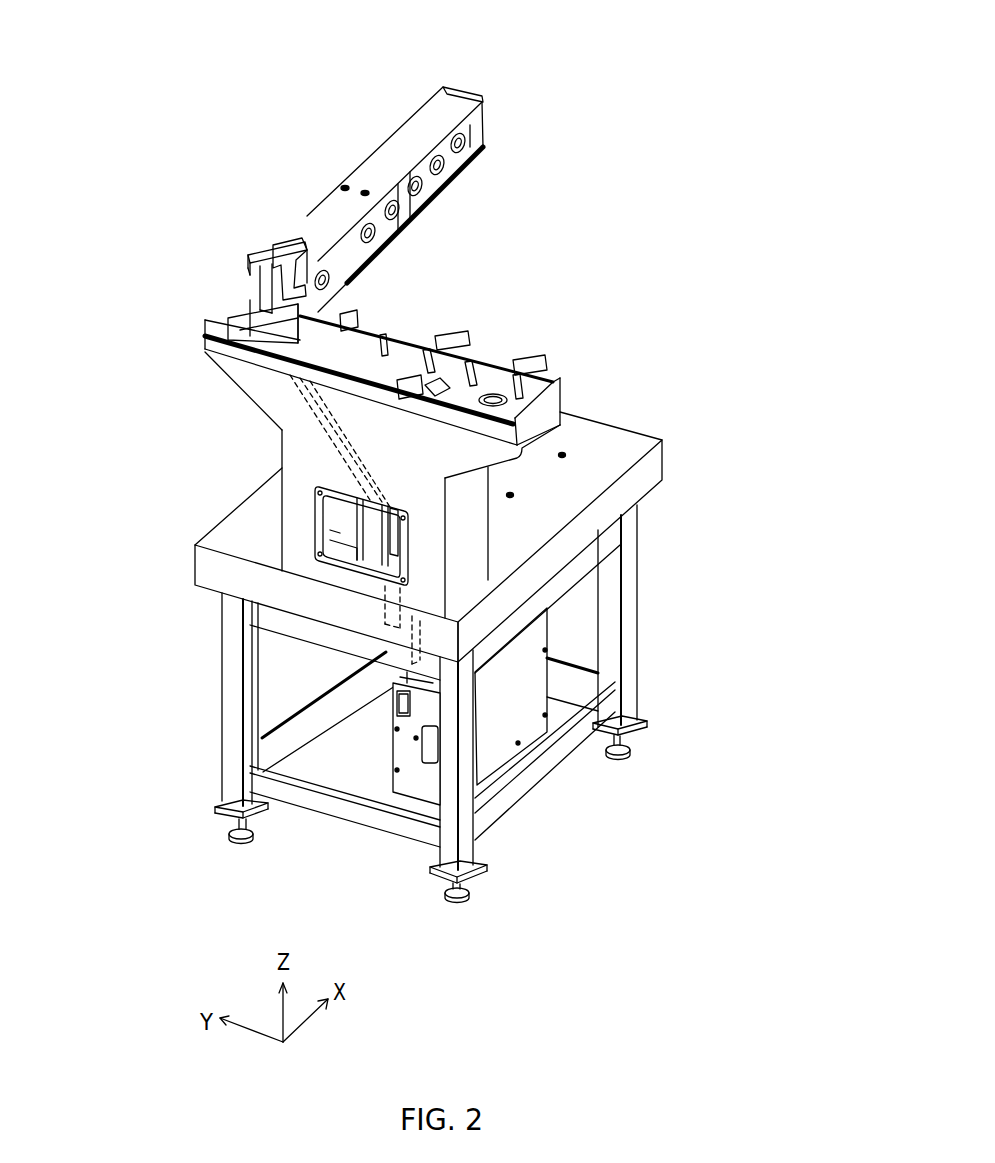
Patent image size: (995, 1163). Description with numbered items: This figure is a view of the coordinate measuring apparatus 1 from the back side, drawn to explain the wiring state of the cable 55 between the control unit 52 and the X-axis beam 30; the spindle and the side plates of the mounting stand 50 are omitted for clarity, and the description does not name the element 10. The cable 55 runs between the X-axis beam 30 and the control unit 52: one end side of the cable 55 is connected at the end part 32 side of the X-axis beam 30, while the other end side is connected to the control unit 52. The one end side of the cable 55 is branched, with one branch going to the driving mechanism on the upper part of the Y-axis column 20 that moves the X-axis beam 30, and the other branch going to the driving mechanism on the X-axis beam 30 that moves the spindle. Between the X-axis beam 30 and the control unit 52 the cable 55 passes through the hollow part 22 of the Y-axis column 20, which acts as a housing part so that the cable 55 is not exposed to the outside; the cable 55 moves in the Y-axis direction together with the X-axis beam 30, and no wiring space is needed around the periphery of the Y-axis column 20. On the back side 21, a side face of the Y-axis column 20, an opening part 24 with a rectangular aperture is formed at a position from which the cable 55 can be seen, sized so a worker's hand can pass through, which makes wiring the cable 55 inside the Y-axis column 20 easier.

The coordinate measuring apparatus 1 is at (461, 26).
The base table top 10 is at (654, 470).
The Y-axis column 20 is at (478, 523).
The back side 21 is at (267, 410).
The hollow part 22 is at (338, 512).
The opening part 24 is at (392, 507).
The X-axis beam 30 is at (328, 202).
The end part 32 is at (267, 250).
The mounting stand 50 is at (631, 562).
The control unit 52 is at (508, 737).
The cable 55 is at (364, 582).